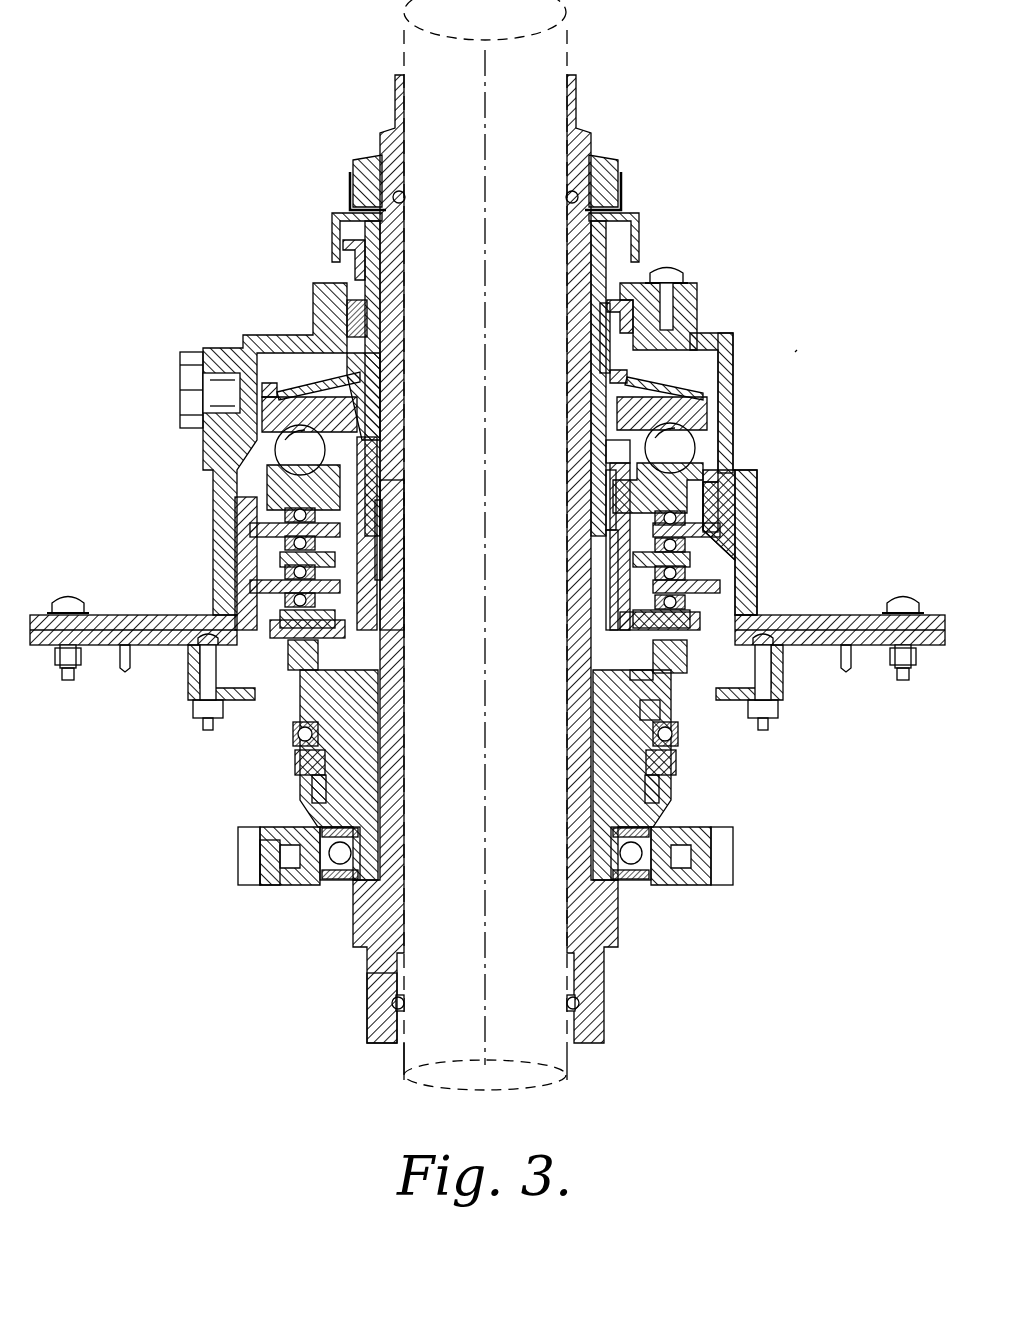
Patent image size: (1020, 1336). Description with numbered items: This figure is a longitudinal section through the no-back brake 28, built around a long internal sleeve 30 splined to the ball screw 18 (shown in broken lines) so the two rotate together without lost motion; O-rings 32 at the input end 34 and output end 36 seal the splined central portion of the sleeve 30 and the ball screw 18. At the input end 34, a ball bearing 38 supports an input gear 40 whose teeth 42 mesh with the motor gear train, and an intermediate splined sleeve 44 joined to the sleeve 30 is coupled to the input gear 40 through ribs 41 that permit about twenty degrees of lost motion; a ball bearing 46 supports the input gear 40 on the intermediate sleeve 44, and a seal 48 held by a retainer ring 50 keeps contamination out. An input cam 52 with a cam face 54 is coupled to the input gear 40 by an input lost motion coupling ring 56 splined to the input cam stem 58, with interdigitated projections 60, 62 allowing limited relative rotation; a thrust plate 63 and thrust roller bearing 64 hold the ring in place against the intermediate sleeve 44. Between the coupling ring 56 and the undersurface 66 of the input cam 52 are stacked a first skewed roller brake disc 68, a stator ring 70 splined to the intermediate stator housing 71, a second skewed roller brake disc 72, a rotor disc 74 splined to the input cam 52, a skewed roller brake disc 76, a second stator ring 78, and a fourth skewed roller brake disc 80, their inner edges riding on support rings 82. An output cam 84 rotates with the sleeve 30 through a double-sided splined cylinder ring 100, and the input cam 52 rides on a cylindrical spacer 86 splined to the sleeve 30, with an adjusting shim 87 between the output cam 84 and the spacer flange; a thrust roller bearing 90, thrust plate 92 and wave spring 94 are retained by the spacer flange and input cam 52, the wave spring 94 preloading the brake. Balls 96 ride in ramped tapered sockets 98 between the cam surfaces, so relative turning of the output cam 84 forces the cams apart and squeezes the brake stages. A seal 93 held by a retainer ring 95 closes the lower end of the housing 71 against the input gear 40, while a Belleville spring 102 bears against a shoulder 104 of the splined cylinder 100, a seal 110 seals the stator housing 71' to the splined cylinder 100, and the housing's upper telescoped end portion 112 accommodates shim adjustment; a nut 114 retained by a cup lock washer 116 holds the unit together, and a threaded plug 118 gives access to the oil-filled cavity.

The ball screw 18 is at (590, 1080).
The no-back brake 28 is at (800, 352).
The long internal sleeve 30 is at (407, 1044).
The O-rings 32 is at (566, 197).
The input end 34 is at (368, 985).
The output end 36 is at (395, 100).
The ball bearing 38 is at (328, 882).
The input gear 40 is at (285, 888).
The ribs 41 is at (692, 730).
The teeth 42 is at (240, 860).
The intermediate splined sleeve 44 is at (350, 752).
The ball bearing 46 is at (295, 745).
The seal 48 is at (315, 800).
The retainer ring 50 is at (300, 775).
The input cam 52 is at (725, 520).
The cam face 54 is at (742, 478).
The input lost motion coupling ring 56 is at (320, 655).
The input cam stem 58 is at (633, 568).
The interdigitated projections 60 is at (700, 580).
The interdigitated projections 62 is at (670, 587).
The thrust plate 63 is at (652, 700).
The thrust roller bearing 64 is at (655, 688).
The undersurface of the input cam 66 is at (745, 545).
The first skewed roller brake disc 68 is at (350, 632).
The stator ring 70 is at (390, 576).
The intermediate stator housing 71 is at (485, 651).
The stator housing 71' is at (487, 430).
The second skewed roller brake disc 72 is at (280, 615).
The rotor disc 74 is at (378, 542).
The skewed roller brake disc 76 is at (280, 558).
The second stator ring 78 is at (250, 528).
The fourth skewed roller brake disc 80 is at (226, 478).
The support rings 82 is at (370, 515).
The output cam 84 is at (630, 420).
The cylindrical spacer 86 is at (612, 485).
The shim 87 is at (325, 452).
The thrust roller bearing 90 is at (618, 450).
The thrust plate 92 is at (614, 505).
The seal 93 is at (192, 690).
The wave spring 94 is at (715, 460).
The retainer ring 95 is at (206, 726).
The balls 96 is at (695, 448).
The tapered sockets 98 is at (725, 400).
The double-sided splined cylinder ring 100 is at (594, 250).
The Belleville spring 102 is at (690, 345).
The shoulder 104 is at (602, 360).
The seal 110 is at (610, 300).
The upper telescoped end portion 112 is at (650, 240).
The nut 114 is at (608, 165).
The cup lock washer 116 is at (622, 190).
The threaded plug 118 is at (180, 385).